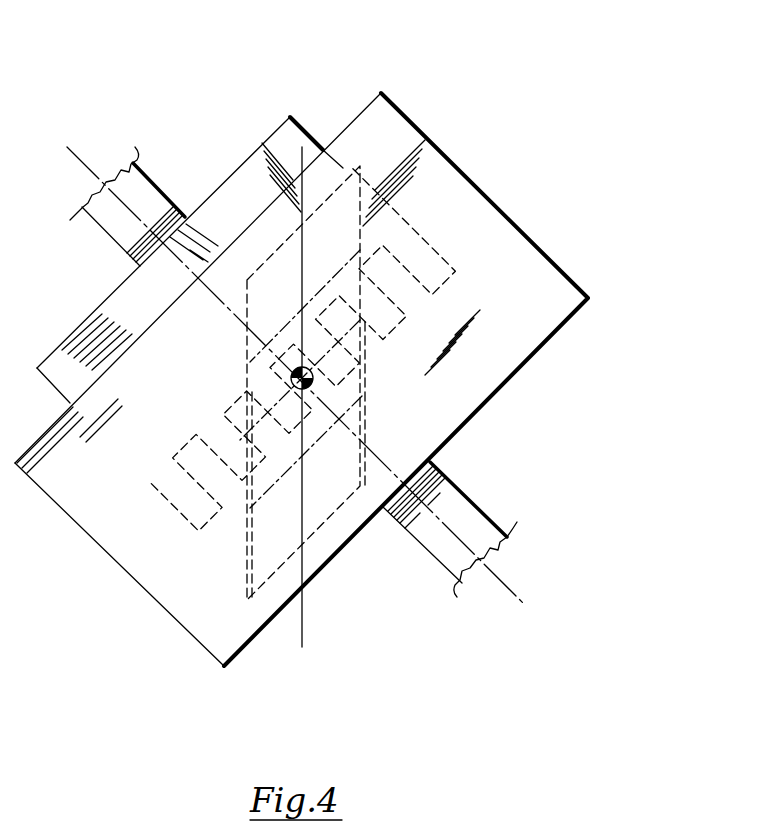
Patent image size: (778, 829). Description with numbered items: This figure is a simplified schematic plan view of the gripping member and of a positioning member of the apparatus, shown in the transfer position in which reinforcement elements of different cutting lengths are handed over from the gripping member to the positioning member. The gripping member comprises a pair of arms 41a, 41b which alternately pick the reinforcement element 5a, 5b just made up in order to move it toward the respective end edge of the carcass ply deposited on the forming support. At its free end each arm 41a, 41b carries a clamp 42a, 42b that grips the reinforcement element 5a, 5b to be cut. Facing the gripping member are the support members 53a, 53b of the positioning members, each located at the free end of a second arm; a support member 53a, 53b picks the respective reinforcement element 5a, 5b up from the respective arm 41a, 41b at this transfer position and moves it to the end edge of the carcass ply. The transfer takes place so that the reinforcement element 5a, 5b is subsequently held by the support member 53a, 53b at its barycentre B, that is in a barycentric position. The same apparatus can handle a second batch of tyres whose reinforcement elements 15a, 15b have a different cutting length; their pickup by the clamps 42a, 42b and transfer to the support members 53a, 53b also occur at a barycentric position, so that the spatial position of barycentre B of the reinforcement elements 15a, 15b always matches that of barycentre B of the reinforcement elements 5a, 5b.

The arm 41a is at (121, 180).
The arm 41b is at (106, 163).
The clamp 42a is at (190, 207).
The clamp 42b is at (281, 145).
The support member 53a is at (355, 379).
The support member 53b is at (508, 272).
The reinforcement element 15a is at (373, 383).
The reinforcement element 15b is at (362, 410).
The reinforcement element 5a is at (423, 569).
The reinforcement element 5b is at (330, 495).
The barycentre B is at (291, 376).